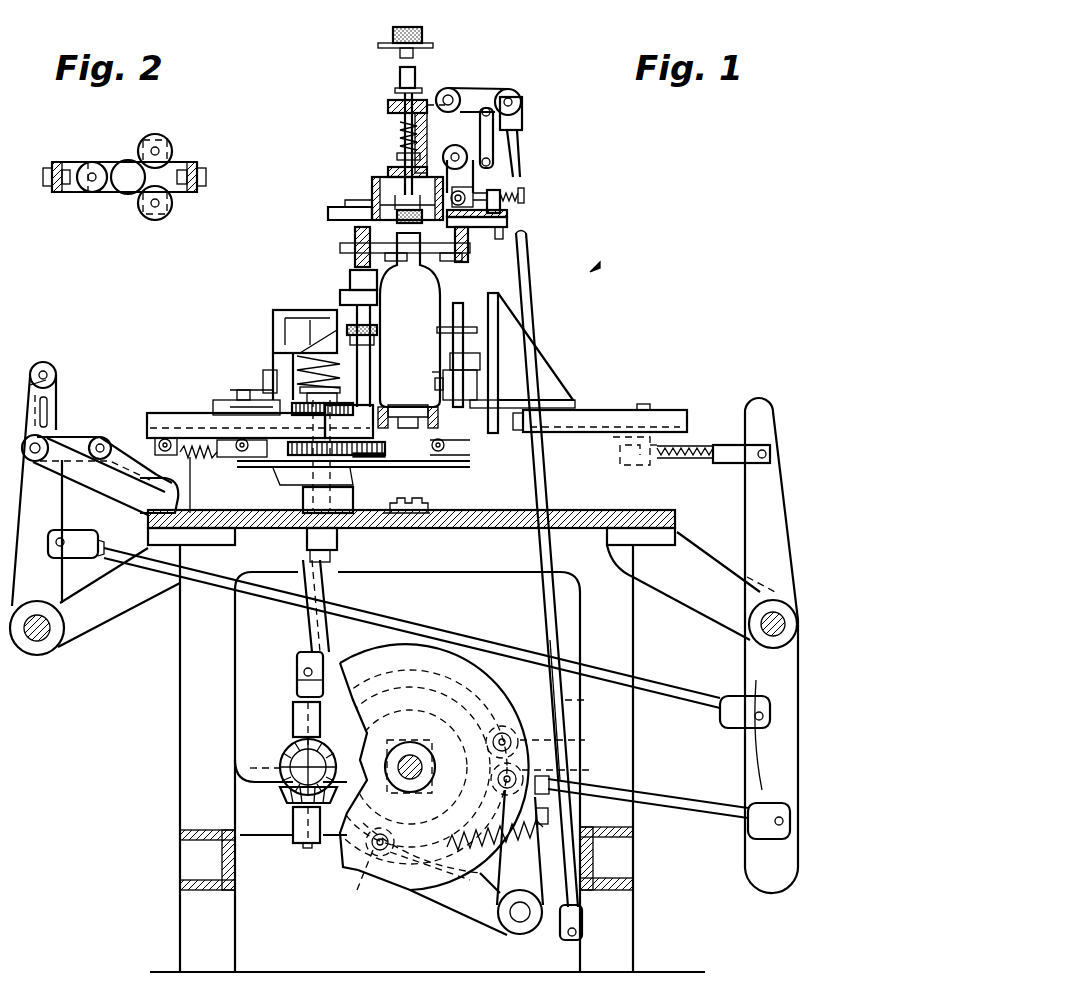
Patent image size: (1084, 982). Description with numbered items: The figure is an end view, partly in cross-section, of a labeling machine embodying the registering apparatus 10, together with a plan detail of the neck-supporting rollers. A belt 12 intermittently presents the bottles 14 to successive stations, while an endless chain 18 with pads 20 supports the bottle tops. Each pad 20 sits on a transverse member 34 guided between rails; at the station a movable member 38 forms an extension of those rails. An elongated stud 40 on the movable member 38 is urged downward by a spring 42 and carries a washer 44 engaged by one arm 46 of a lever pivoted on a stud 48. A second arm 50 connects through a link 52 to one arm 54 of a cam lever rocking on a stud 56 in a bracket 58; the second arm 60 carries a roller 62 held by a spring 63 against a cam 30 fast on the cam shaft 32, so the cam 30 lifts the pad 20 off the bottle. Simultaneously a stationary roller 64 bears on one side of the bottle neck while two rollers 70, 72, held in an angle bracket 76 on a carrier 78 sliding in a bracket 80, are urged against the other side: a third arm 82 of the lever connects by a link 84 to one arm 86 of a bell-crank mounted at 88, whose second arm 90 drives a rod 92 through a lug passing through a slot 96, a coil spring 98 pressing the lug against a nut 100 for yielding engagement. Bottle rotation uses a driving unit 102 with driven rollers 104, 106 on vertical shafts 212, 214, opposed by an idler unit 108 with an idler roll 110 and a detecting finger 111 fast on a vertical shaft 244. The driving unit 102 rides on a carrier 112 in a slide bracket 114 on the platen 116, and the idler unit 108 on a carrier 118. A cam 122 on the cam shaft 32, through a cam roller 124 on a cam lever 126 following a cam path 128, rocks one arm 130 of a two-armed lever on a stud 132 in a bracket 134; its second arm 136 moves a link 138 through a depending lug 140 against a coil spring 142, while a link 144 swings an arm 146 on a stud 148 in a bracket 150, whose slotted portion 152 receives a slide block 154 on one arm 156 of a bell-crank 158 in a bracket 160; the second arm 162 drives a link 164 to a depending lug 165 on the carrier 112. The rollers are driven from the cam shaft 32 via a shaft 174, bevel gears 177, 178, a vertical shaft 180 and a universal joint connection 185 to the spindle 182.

In FIG. 1, the registering apparatus 10 is at (595, 268).
In FIG. 1, the belt 12 is at (403, 420).
In FIG. 1, the bottle 14 is at (410, 320).
In FIG. 1, the endless chain 18 is at (420, 50).
In FIG. 1, the pad 20 is at (393, 35).
In FIG. 1, the cam 30 is at (463, 700).
In FIG. 1, the cam shaft 32 is at (410, 792).
In FIG. 1, the transverse member 34 is at (400, 205).
In FIG. 1, the movable member 38 is at (395, 182).
In FIG. 1, the elongated stud 40 is at (385, 110).
In FIG. 1, the spring 42 is at (400, 140).
In FIG. 1, the washer 44 is at (398, 95).
In FIG. 1, the arm of lever 46 is at (420, 95).
In FIG. 1, the stud 48 is at (455, 95).
In FIG. 1, the second arm of lever 50 is at (525, 103).
In FIG. 1, the link 52 is at (532, 285).
In FIG. 1, the arm of cam lever 54 is at (570, 940).
In FIG. 1, the stud 56 is at (516, 922).
In FIG. 1, the bracket 58 is at (575, 880).
In FIG. 1, the second arm of cam lever 60 is at (465, 900).
In FIG. 1, the roller 62 is at (410, 870).
In FIG. 1, the spring 63 is at (497, 829).
In FIG. 2, the stationary roller 64 is at (92, 193).
In FIG. 1, the stationary roller 64 is at (355, 250).
In FIG. 2, the roller 70 is at (165, 138).
In FIG. 2, the roller 72 is at (155, 220).
In FIG. 1, the roller 72 is at (455, 265).
In FIG. 1, the angle bracket 76 is at (465, 258).
In FIG. 1, the carrier 78 is at (507, 222).
In FIG. 1, the bracket 80 is at (507, 212).
In FIG. 1, the third arm of lever 82 is at (480, 100).
In FIG. 1, the link 84 is at (522, 122).
In FIG. 1, the arm of bell-crank 86 is at (515, 160).
In FIG. 1, the pivot 88 is at (452, 158).
In FIG. 1, the second arm of bell-crank 90 is at (490, 190).
In FIG. 1, the rod 92 is at (525, 195).
In FIG. 1, the slot 96 is at (478, 227).
In FIG. 1, the coil spring 98 is at (500, 205).
In FIG. 1, the nut 100 is at (505, 192).
In FIG. 1, the driving unit 102 is at (280, 355).
In FIG. 1, the driven roller 104 is at (385, 338).
In FIG. 1, the driven roller 106 is at (385, 344).
In FIG. 1, the opposing unit 108 is at (555, 380).
In FIG. 1, the idler roll 110 is at (470, 330).
In FIG. 1, the detecting finger 111 is at (430, 370).
In FIG. 1, the carrier 112 is at (155, 413).
In FIG. 1, the slide bracket 114 is at (411, 508).
In FIG. 1, the platen 116 is at (250, 528).
In FIG. 1, the carrier 118 is at (610, 414).
In FIG. 1, the cam 122 is at (421, 751).
In FIG. 1, the cam roller 124 is at (552, 742).
In FIG. 1, the cam lever 126 is at (557, 777).
In FIG. 1, the cam path 128 is at (662, 764).
In FIG. 1, the arm of two-armed lever 130 is at (770, 853).
In FIG. 1, the stud 132 is at (760, 646).
In FIG. 1, the bracket 134 is at (690, 612).
In FIG. 1, the second arm of two-armed lever 136 is at (745, 520).
In FIG. 1, the link 138 is at (725, 463).
In FIG. 1, the depending lug 140 is at (616, 448).
In FIG. 1, the coil spring 142 is at (700, 440).
In FIG. 1, the link 144 is at (392, 614).
In FIG. 1, the arm 146 is at (45, 362).
In FIG. 1, the stud 148 is at (42, 655).
In FIG. 1, the bracket 150 is at (118, 620).
In FIG. 1, the slotted portion 152 is at (48, 384).
In FIG. 1, the slide block 154 is at (58, 400).
In FIG. 1, the arm of bell-crank 156 is at (62, 414).
In FIG. 1, the bell-crank 158 is at (58, 430).
In FIG. 1, the bracket 160 is at (110, 492).
In FIG. 1, the second arm of bell-crank 162 is at (82, 440).
In FIG. 1, the link 164 is at (128, 452).
In FIG. 1, the depending lug 165 is at (105, 476).
In FIG. 1, the shaft 174 is at (237, 756).
In FIG. 1, the bevel gear 177 is at (290, 742).
In FIG. 1, the bevel gear 178 is at (290, 795).
In FIG. 1, the vertical shaft 180 is at (305, 850).
In FIG. 1, the spindle 182 is at (325, 530).
In FIG. 1, the universal joint connection 185 is at (312, 630).
In FIG. 1, the vertical shaft 212 is at (335, 275).
In FIG. 1, the vertical shaft 214 is at (325, 295).
In FIG. 1, the vertical shaft 244 is at (460, 410).